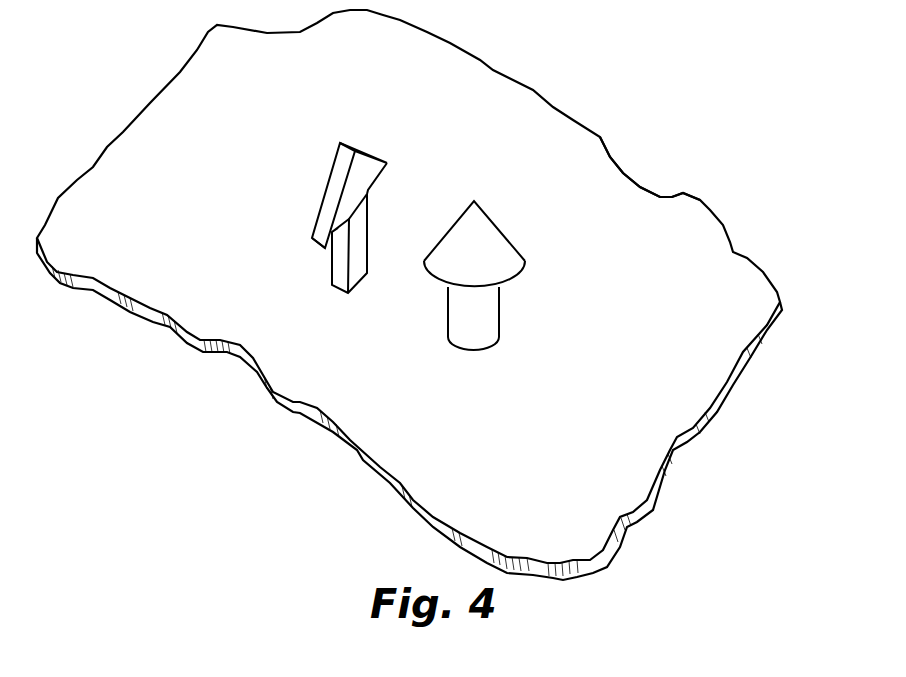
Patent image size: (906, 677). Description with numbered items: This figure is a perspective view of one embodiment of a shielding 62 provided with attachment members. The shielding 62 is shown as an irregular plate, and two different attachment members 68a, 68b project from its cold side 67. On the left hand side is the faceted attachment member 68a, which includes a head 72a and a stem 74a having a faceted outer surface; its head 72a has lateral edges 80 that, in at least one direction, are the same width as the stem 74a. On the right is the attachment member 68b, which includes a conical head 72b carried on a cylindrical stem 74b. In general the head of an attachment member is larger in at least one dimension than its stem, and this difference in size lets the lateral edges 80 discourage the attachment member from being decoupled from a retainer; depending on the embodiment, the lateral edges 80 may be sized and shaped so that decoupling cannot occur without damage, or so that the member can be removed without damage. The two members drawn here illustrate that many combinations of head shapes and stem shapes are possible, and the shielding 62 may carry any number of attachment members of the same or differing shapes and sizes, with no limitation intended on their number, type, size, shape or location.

The shielding 62 is at (537, 131).
The cold side 67 is at (668, 214).
The faceted attachment member 68a is at (361, 193).
The attachment member 68b is at (514, 249).
The head 72a is at (328, 183).
The conical head 72b is at (460, 226).
The stem 74a is at (367, 231).
The cylindrical stem 74b is at (492, 320).
The lateral edges 80 is at (317, 247).